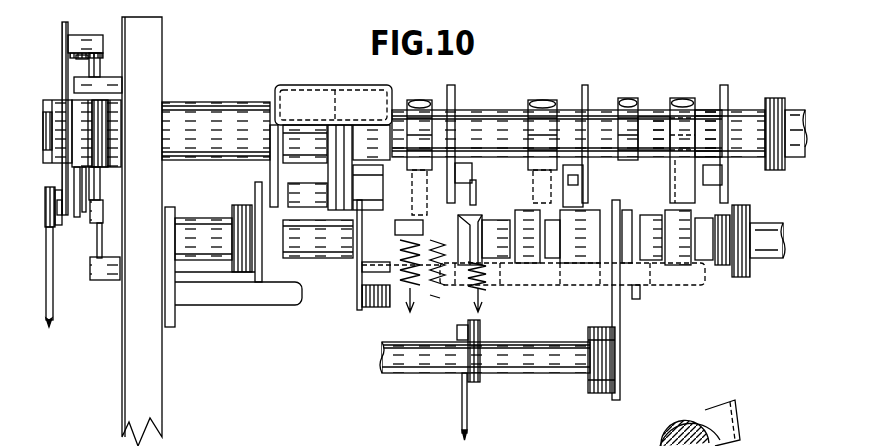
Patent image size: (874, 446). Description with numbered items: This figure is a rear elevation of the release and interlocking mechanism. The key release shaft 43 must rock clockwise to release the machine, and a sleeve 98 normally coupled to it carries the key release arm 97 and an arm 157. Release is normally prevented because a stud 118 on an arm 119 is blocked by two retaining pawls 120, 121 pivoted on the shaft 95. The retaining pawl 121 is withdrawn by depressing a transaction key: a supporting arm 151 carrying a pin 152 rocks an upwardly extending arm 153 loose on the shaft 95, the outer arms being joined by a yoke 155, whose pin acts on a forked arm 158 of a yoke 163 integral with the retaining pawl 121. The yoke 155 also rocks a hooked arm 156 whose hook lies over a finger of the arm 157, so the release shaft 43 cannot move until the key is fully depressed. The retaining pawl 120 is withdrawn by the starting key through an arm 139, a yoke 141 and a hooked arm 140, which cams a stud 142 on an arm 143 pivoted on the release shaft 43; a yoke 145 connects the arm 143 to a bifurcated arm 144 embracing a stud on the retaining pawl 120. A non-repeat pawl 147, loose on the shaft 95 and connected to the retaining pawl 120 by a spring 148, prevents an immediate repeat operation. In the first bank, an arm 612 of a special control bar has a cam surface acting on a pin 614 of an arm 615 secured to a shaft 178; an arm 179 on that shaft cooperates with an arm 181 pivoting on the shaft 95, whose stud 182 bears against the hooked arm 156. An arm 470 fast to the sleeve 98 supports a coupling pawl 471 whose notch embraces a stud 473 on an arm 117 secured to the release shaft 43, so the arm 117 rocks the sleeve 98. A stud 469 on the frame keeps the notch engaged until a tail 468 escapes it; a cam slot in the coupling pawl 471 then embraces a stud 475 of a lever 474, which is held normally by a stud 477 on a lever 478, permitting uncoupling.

The release shaft 43 is at (43, 131).
The shaft 95 is at (758, 222).
The key release arm 97 is at (416, 100).
The sleeve 98 is at (515, 95).
The arm 117 is at (76, 57).
The stud 118 is at (330, 190).
The arm 119 is at (330, 130).
The retaining pawl 120 is at (378, 172).
The retaining pawl 121 is at (350, 172).
The arm 139 is at (170, 327).
The hooked arm 140 is at (255, 193).
The yoke 141 is at (208, 298).
The stud 142 is at (252, 262).
The arm 143 is at (270, 178).
The bifurcated arm 144 is at (388, 135).
The yoke 145 is at (312, 70).
The non-repeat pawl 147 is at (362, 298).
The spring 148 is at (395, 272).
The supporting arm 151 is at (456, 92).
The pin 152 is at (472, 170).
The arm 153 is at (478, 184).
The yoke 155 is at (490, 285).
The hooked arm 156 is at (636, 299).
The arm 157 is at (630, 98).
The forked arm 158 is at (466, 212).
The yoke 163 is at (424, 290).
The shaft 178 is at (440, 370).
The arm 179 is at (620, 352).
The arm 181 is at (606, 292).
The stud 182 is at (703, 177).
The tail 468 is at (97, 250).
The stud 469 is at (114, 280).
The arm 470 is at (116, 132).
The coupling pawl 471 is at (96, 61).
The stud 473 is at (103, 210).
The lever 474 is at (62, 78).
The stud 475 is at (105, 22).
The stud 477 is at (50, 227).
The lever 478 is at (46, 290).
The arm 612 is at (467, 396).
The pin 614 is at (457, 330).
The arm 615 is at (480, 330).